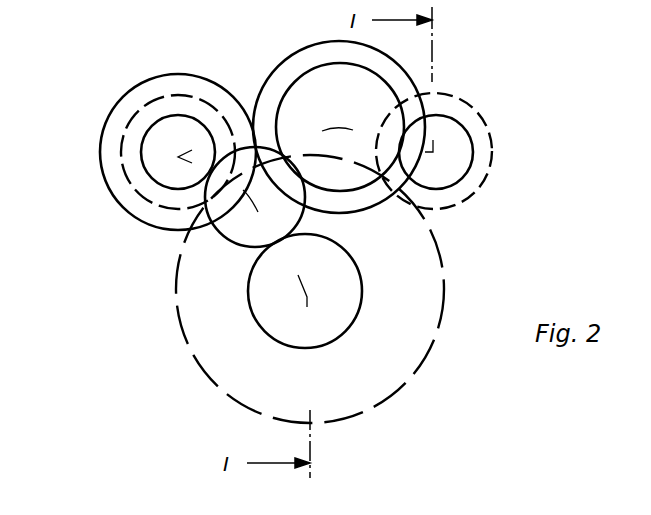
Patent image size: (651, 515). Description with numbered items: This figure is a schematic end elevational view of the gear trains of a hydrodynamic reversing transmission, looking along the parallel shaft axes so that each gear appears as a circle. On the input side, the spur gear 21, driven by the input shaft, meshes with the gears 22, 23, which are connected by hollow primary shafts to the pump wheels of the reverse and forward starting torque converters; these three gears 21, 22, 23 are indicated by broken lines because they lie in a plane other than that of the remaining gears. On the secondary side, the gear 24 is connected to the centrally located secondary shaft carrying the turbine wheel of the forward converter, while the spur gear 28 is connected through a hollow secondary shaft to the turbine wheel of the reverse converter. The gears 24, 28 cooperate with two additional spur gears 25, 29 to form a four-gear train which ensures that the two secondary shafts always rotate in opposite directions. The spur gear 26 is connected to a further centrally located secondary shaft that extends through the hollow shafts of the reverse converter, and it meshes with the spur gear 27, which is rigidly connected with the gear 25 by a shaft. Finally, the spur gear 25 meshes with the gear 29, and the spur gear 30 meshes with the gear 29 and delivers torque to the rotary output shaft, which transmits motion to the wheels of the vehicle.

The spur gear 21 is at (417, 363).
The spur gear 22 is at (132, 188).
The spur gear 23 is at (489, 126).
The gear 24 is at (473, 160).
The spur gear 25 is at (283, 100).
The spur gear 26 is at (102, 140).
The spur gear 27 is at (287, 60).
The spur gear 28 is at (163, 190).
The spur gear 29 is at (232, 243).
The spur gear 30 is at (337, 338).